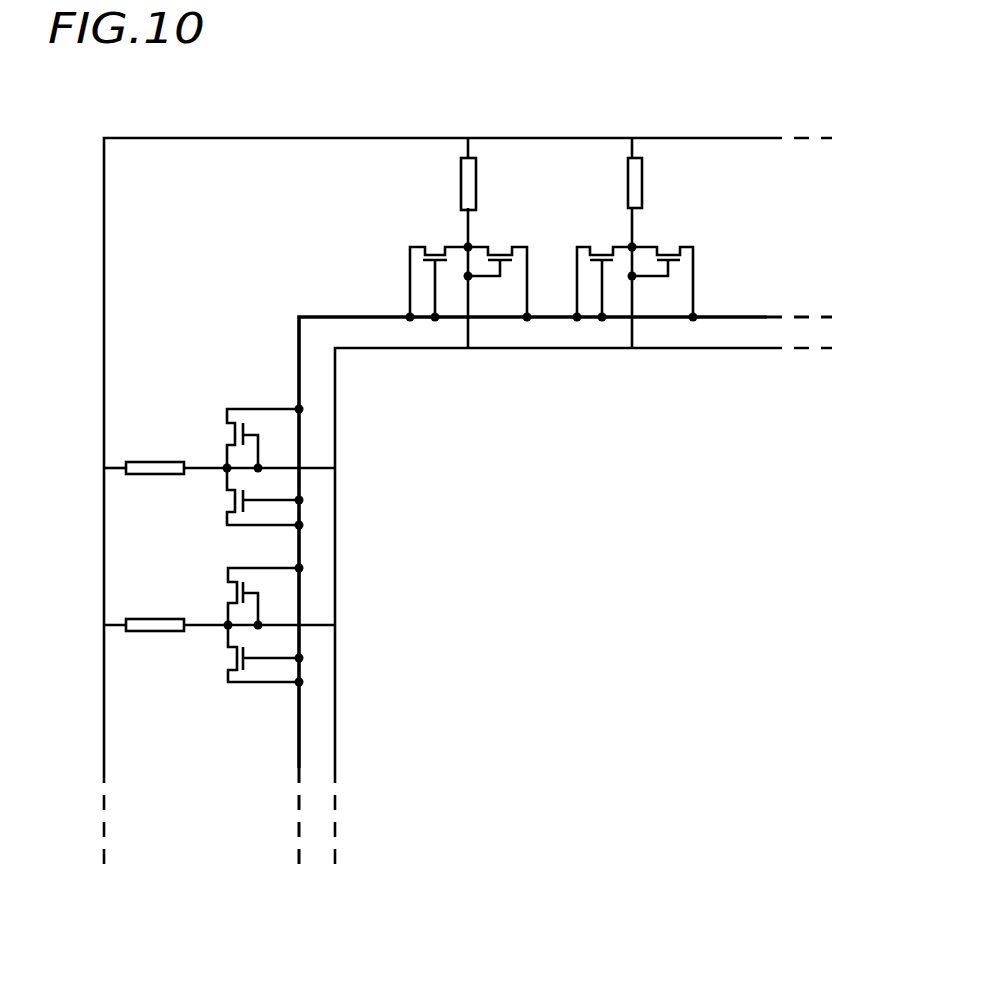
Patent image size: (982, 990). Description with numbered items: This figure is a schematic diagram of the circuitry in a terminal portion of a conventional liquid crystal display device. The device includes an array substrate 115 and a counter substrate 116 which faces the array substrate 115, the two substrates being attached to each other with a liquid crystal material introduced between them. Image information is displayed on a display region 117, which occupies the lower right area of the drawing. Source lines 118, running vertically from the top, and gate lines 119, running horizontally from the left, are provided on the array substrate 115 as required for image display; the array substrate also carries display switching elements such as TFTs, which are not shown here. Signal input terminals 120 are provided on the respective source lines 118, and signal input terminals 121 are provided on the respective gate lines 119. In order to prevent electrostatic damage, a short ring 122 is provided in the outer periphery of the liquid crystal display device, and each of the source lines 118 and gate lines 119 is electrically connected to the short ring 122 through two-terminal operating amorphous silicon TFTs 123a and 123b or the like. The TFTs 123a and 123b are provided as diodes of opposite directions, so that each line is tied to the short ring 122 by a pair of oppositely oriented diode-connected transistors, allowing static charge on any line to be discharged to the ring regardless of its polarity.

The array substrate 115 is at (260, 138).
The counter substrate 116 is at (702, 348).
The display region 117 is at (665, 672).
The source lines 118 is at (635, 225).
The gate lines 119 is at (200, 470).
The signal input terminals 120 is at (630, 167).
The signal input terminals 121 is at (150, 462).
The short ring 122 is at (299, 722).
The two-terminal operating a-Si TFT 123a is at (667, 245).
The two-terminal operating a-Si TFT 123b is at (605, 245).